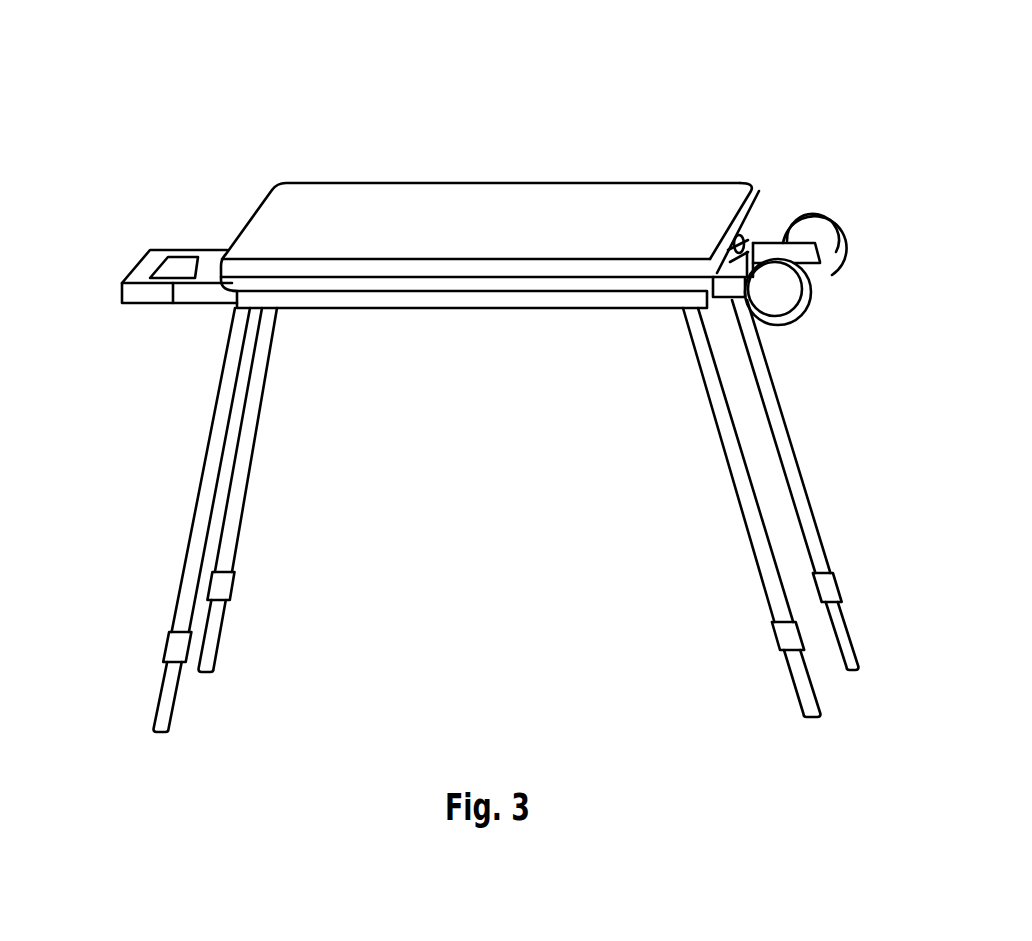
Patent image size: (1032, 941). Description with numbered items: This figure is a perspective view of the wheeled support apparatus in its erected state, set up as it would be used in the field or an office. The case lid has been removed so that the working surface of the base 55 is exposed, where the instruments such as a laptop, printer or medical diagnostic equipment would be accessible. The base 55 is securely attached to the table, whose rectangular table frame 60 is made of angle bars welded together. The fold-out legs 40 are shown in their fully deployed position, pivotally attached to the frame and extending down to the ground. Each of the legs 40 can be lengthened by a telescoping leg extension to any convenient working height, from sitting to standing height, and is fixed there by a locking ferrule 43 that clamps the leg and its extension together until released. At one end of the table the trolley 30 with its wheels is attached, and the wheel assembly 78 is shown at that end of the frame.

The trolley 30 is at (190, 241).
The folding legs 40 is at (203, 497).
The locking ferrules 43 is at (827, 583).
The base 55 is at (318, 212).
The table frame 60 is at (533, 300).
The wheel assembly 78 is at (820, 213).